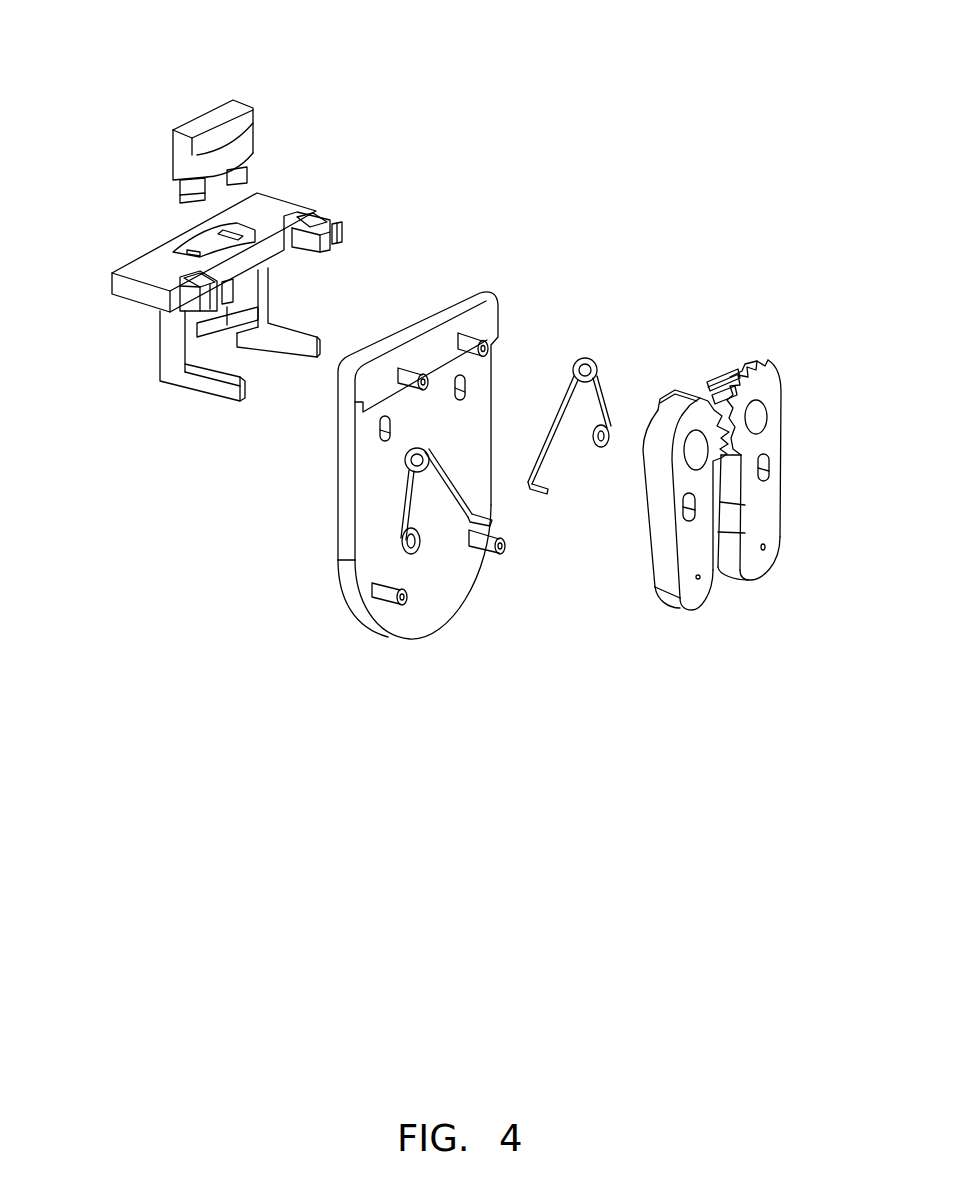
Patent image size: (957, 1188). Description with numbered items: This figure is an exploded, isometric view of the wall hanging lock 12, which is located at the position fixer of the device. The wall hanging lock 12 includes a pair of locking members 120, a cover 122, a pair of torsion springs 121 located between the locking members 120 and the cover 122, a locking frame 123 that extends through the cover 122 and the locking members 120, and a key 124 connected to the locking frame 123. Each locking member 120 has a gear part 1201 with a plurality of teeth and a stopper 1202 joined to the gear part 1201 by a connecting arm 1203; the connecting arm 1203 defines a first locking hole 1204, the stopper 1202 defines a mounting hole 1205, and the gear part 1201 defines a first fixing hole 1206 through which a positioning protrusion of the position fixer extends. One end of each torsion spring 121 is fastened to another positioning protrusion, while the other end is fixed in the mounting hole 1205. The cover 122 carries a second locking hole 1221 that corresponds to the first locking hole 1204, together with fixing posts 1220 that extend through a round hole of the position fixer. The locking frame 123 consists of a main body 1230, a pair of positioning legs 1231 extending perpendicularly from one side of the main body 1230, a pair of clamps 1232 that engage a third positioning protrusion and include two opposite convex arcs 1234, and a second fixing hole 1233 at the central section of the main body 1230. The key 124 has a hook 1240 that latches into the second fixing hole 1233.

The wall hanging lock 12 is at (558, 108).
The locking members 120 is at (776, 452).
The gear part 1201 is at (727, 378).
The stopper 1202 is at (688, 592).
The connecting arm 1203 is at (716, 512).
The first locking hole 1204 is at (769, 468).
The mounting hole 1205 is at (766, 547).
The first fixing hole 1206 is at (761, 417).
The torsion springs 121 is at (592, 360).
The cover 122 is at (410, 441).
The fixing posts 1220 is at (484, 345).
The second locking hole 1221 is at (380, 428).
The locking frame 123 is at (234, 286).
The main body 1230 is at (138, 290).
The positioning legs 1231 is at (208, 388).
The clamps 1232 is at (318, 222).
The second fixing hole 1233 is at (176, 247).
The convex arc 1234 is at (343, 230).
The key 124 is at (208, 146).
The hook 1240 is at (180, 190).